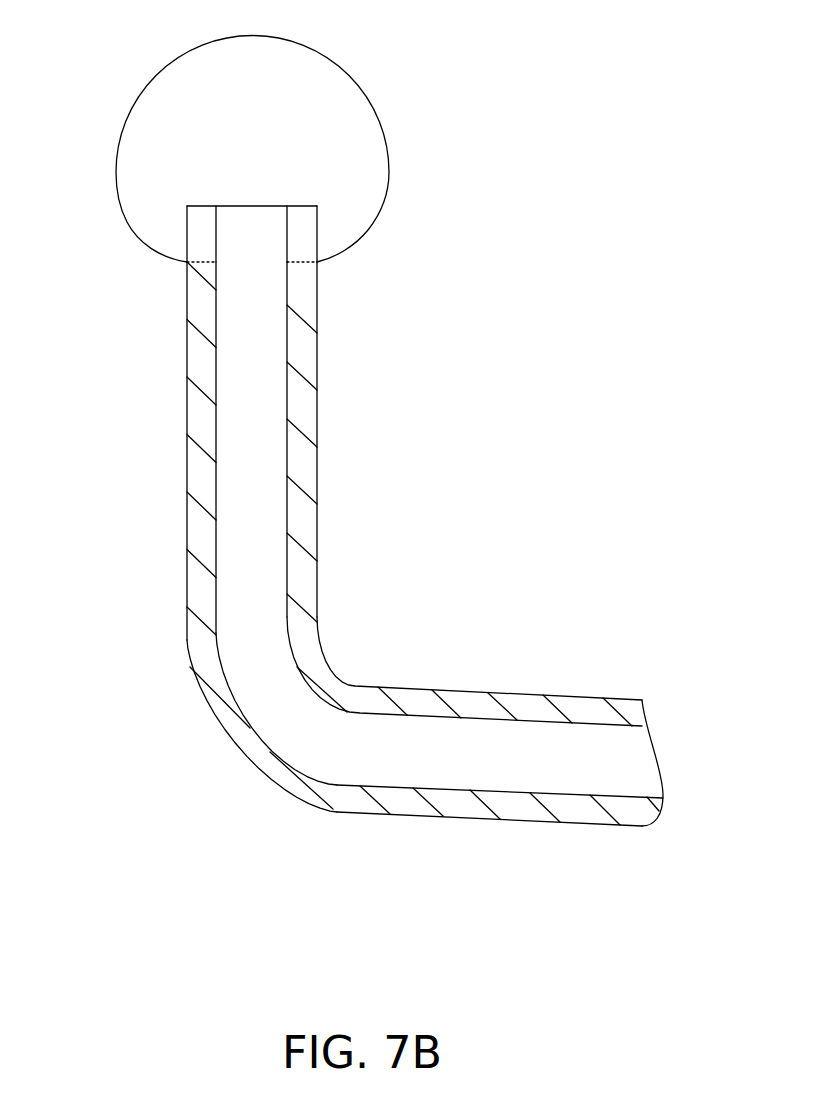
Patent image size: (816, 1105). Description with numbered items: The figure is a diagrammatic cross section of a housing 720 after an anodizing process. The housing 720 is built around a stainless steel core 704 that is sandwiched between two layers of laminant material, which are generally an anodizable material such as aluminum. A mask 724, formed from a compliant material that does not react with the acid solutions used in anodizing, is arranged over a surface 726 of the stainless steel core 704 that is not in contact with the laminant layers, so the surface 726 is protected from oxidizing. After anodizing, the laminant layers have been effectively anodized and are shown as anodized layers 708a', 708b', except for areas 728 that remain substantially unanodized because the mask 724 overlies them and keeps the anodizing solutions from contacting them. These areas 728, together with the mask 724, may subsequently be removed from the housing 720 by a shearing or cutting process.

The stainless steel core 704 is at (643, 770).
The anodized layer of laminant material 708a' is at (464, 671).
The anodized layer of laminant material 708b' is at (217, 722).
The housing 720 is at (187, 335).
The mask 724 is at (366, 135).
The surface 726 is at (263, 203).
The areas 728 is at (312, 230).